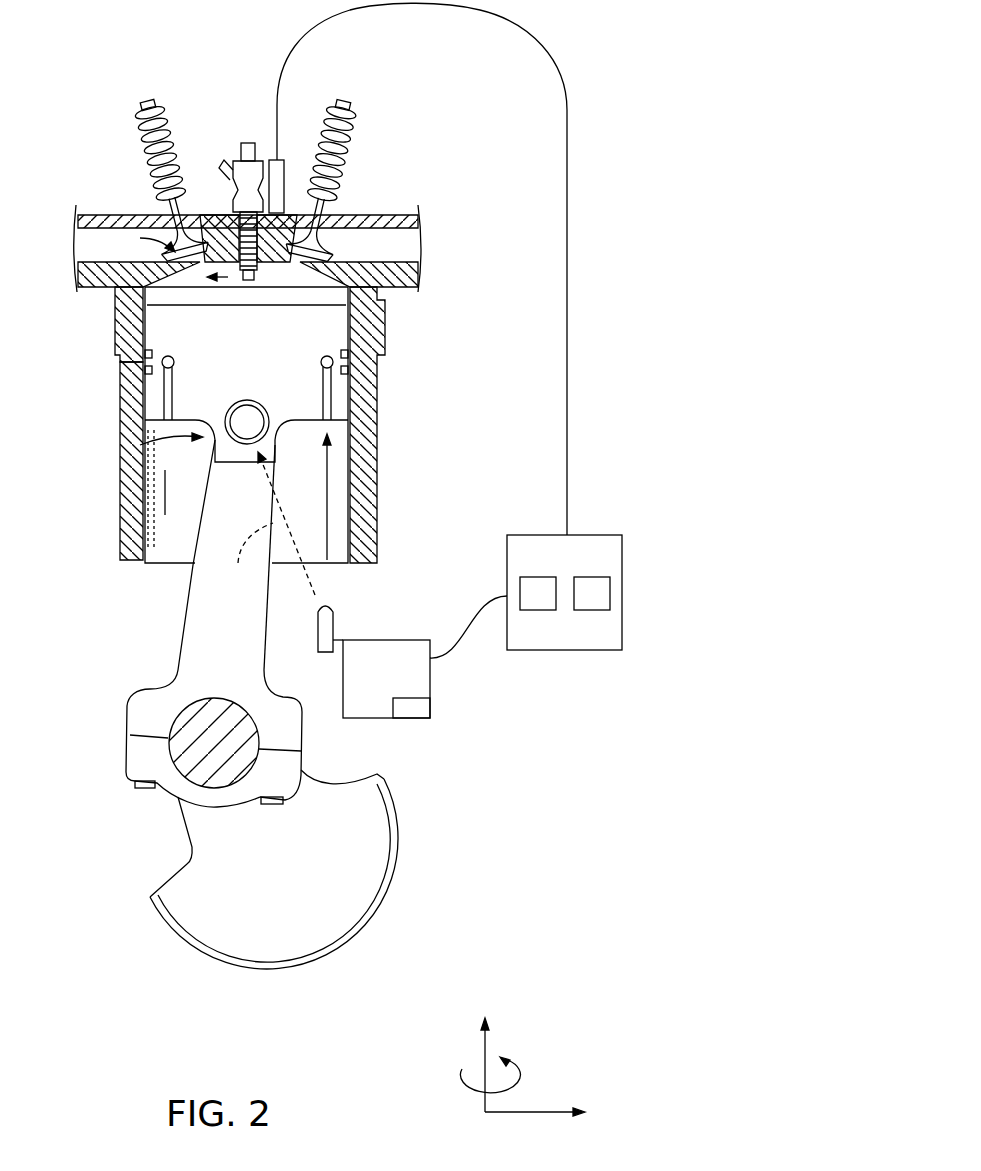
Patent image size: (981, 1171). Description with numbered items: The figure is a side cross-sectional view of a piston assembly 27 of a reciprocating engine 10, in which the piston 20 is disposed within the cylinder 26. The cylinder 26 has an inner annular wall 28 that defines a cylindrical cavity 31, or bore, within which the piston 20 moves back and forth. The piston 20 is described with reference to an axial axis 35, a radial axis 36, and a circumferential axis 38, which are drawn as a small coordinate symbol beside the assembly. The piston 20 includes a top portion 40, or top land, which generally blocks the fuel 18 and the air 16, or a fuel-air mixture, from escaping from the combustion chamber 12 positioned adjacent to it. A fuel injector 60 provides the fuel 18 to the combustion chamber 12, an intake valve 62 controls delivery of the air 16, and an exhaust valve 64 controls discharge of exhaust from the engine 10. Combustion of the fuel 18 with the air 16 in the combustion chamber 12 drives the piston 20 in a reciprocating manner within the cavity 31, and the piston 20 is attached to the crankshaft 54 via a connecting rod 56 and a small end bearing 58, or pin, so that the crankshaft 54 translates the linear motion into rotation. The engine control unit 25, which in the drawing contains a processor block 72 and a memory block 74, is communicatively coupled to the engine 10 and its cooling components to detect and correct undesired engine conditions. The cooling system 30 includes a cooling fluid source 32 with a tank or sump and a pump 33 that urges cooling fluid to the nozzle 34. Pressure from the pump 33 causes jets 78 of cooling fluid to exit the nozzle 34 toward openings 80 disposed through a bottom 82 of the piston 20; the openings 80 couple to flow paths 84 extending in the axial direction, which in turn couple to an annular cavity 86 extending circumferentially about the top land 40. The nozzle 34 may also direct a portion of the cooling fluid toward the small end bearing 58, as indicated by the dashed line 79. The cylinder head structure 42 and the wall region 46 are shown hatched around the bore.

The engine 10 is at (465, 123).
The combustion chamber 12 is at (286, 277).
The air 16 is at (152, 225).
The fuel 18 is at (247, 141).
The piston 20 is at (353, 423).
The engine control unit 25 is at (595, 535).
The cylinder 26 is at (125, 450).
The piston assembly 27 is at (140, 445).
The inner annular wall 28 is at (150, 492).
The cooling system 30 is at (407, 627).
The cylindrical cavity 31 is at (190, 554).
The cooling fluid source 32 is at (405, 680).
The pump 33 is at (410, 710).
The nozzle 34 is at (333, 625).
The axial axis 35 is at (483, 1048).
The radial axis 36 is at (527, 1112).
The circumferential axis 38 is at (520, 1082).
The top portion 40 is at (323, 330).
The cylinder block 42 is at (113, 337).
The cylinder liner 46 is at (353, 378).
The crankshaft 54 is at (185, 888).
The connecting rod 56 is at (253, 660).
The small end bearing 58 is at (246, 445).
The fuel injector 60 is at (250, 160).
The intake valve 62 is at (150, 104).
The exhaust valve 64 is at (346, 104).
The processor 72 is at (540, 613).
The memory 74 is at (592, 613).
The jets 78 is at (327, 516).
The dashed line 79 is at (238, 562).
The openings 80 is at (292, 398).
The bottom 82 is at (173, 418).
The flow paths 84 is at (326, 388).
The annular cavity 86 is at (325, 357).